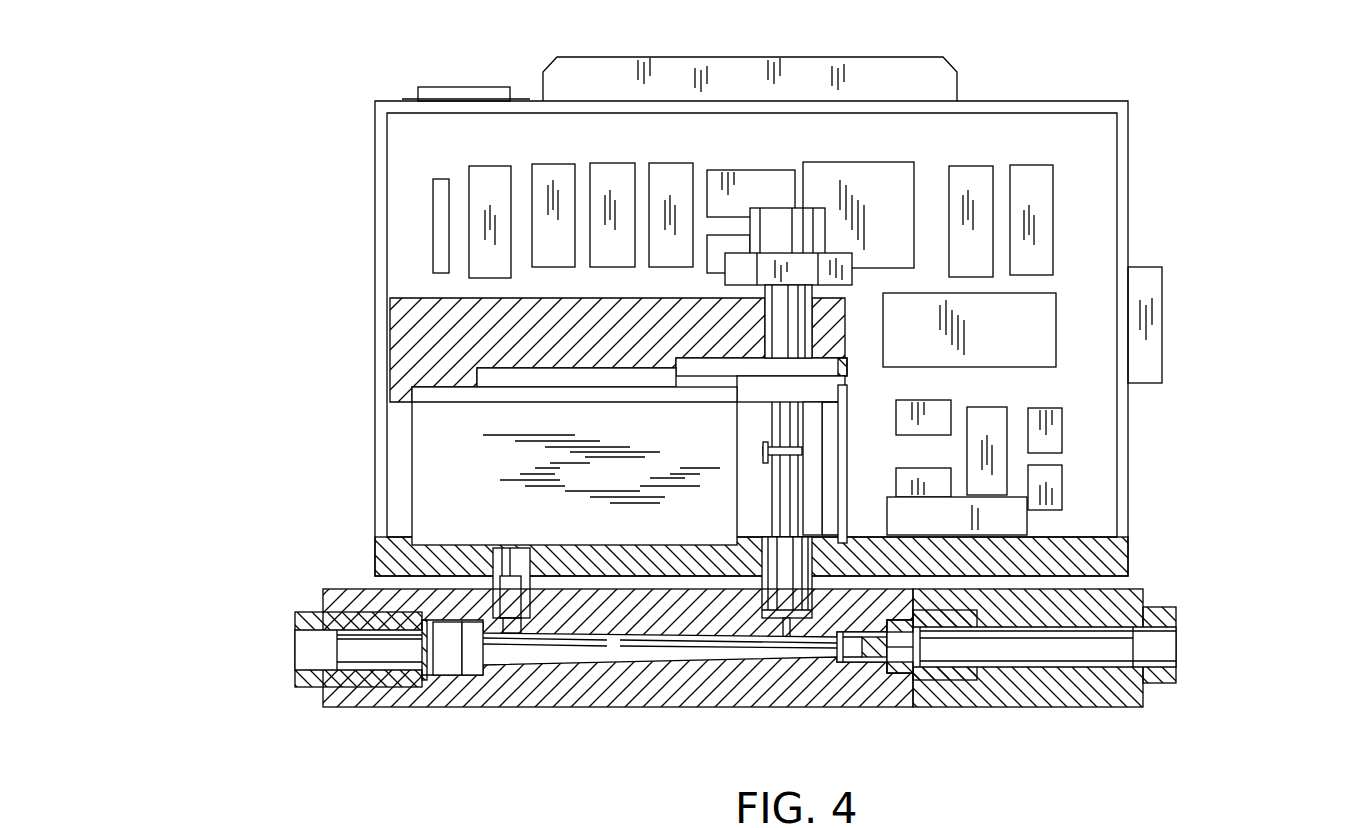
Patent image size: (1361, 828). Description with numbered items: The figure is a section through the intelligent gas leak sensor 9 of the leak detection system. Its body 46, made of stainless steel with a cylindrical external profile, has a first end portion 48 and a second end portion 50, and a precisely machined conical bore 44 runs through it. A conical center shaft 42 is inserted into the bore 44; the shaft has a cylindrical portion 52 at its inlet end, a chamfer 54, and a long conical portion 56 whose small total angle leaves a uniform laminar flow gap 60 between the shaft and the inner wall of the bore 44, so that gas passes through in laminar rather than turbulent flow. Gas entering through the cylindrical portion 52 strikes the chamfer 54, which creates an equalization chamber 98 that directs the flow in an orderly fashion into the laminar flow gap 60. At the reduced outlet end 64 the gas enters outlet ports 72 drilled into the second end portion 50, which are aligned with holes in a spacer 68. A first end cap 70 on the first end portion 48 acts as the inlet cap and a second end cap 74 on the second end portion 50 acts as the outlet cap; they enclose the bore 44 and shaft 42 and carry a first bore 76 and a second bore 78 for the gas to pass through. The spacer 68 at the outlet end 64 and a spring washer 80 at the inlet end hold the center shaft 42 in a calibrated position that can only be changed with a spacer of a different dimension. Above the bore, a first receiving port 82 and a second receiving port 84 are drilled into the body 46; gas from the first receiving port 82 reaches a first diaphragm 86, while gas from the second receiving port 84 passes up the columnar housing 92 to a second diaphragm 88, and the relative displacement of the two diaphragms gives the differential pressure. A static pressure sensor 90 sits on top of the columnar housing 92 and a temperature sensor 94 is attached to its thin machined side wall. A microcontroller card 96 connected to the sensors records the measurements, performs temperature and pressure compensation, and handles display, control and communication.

The intelligent gas leak sensor (IGLS) 9 is at (1257, 93).
The center shaft 42 is at (560, 672).
The conical bore 44 is at (738, 672).
The body 46 is at (950, 700).
The first end portion 48 is at (390, 601).
The second end portion 50 is at (697, 626).
The cylindrical portion 52 is at (447, 670).
The chamfer 54 is at (471, 670).
The conical portion 56 is at (662, 652).
The laminar flow gap 60 is at (612, 650).
The outlet end 64 is at (829, 665).
The spacer 68 is at (898, 677).
The first end cap 70 is at (322, 682).
The outlet ports 72 is at (877, 636).
The second end cap 74 is at (1128, 607).
The first bore 76 is at (302, 648).
The second bore 78 is at (1150, 650).
The spring washer 80 is at (424, 677).
The first receiving port 82 is at (472, 616).
The second receiving port 84 is at (838, 545).
The first diaphragm 86 is at (535, 540).
The second diaphragm 88 is at (532, 374).
The static pressure sensor 90 is at (777, 200).
The columnar housing 92 is at (810, 462).
The temperature sensor 94 is at (782, 447).
The microcontroller card 96 is at (923, 180).
The equalization chamber 98 is at (500, 582).